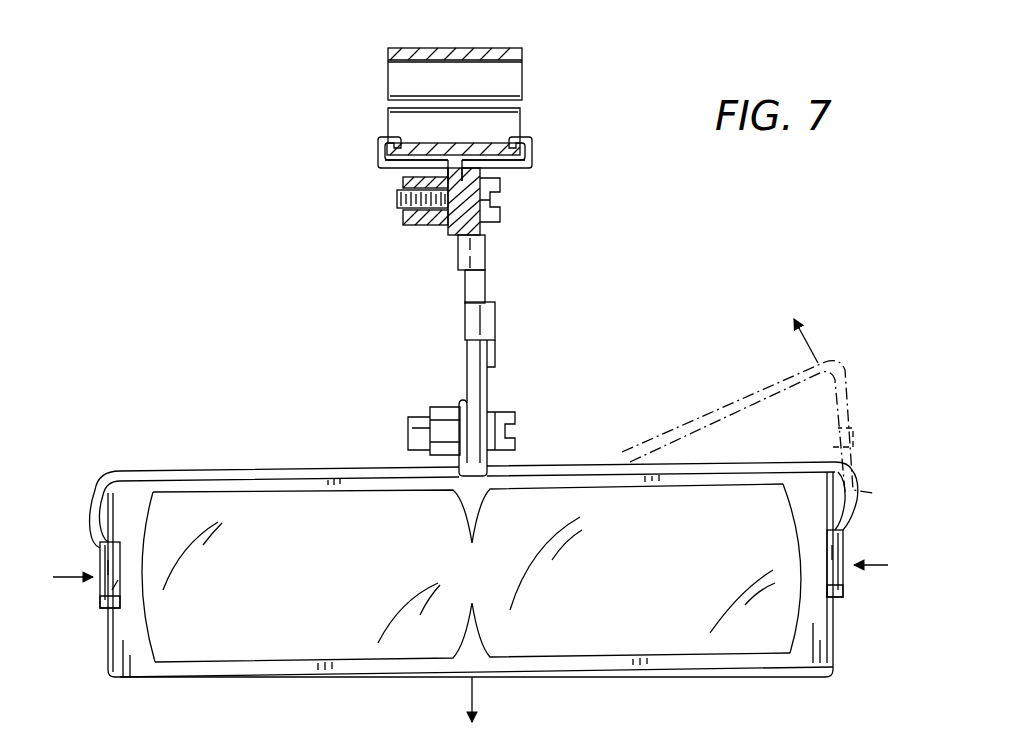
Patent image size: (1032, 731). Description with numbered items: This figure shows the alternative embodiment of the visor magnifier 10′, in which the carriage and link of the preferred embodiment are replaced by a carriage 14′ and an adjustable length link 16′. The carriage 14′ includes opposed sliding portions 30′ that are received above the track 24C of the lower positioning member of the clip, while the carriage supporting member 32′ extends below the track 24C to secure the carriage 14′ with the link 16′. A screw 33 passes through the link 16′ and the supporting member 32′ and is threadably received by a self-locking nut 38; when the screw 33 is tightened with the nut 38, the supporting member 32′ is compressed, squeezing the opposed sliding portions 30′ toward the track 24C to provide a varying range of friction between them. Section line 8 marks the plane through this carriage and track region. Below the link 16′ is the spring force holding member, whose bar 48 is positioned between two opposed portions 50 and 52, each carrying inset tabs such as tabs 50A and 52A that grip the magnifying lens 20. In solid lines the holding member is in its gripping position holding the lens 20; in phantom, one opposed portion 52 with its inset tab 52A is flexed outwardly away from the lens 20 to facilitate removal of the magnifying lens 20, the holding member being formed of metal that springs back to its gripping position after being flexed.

The section line 8 is at (305, 28).
The track 24C is at (483, 147).
The sliding portion 30′ is at (527, 140).
The carriage 14′ is at (522, 165).
The carriage supporting member 32′ is at (455, 235).
The self-locking nut 38 is at (428, 228).
The screw 33 is at (498, 220).
The adjustable length link 16′ is at (485, 287).
The visor magnifier 10′ is at (591, 368).
The bar 48 is at (218, 471).
The opposed portion 50 is at (100, 552).
The inset tab 50A is at (100, 608).
The opposed portion 52 is at (845, 540).
The inset tab 52A is at (843, 587).
The magnifying lens 20 is at (623, 635).